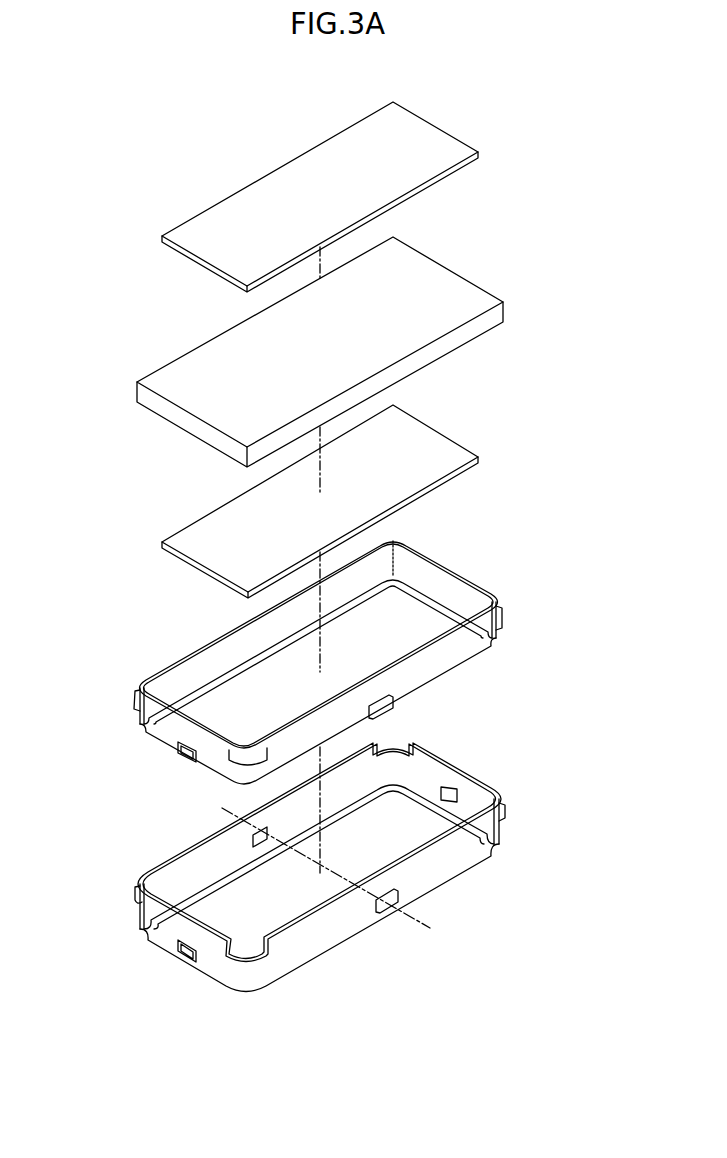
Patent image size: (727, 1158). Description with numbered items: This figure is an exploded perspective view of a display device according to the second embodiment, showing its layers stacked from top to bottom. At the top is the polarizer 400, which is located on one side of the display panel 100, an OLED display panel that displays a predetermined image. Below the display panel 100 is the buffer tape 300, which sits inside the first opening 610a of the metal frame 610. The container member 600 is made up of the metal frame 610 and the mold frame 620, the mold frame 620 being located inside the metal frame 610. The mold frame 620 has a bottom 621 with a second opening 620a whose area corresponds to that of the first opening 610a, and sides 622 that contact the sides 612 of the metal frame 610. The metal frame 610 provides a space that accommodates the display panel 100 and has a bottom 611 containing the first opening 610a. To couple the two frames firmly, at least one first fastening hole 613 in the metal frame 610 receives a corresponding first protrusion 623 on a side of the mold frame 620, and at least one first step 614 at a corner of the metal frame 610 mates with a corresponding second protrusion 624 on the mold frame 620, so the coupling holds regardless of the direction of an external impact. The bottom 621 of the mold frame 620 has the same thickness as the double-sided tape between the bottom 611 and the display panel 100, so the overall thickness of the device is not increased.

The polarizer 400 is at (432, 142).
The display panel 100 is at (432, 285).
The buffer tape 300 is at (432, 448).
The container member 600 is at (590, 562).
The mold frame 620 is at (548, 538).
The sides of the mold frame 622 is at (432, 580).
The bottom of the mold frame 621 is at (450, 615).
The second opening 620a is at (246, 707).
The first protrusion 623 is at (387, 710).
The second protrusion 624 is at (131, 692).
The metal frame 610 is at (548, 730).
The sides of the metal frame 612 is at (432, 767).
The bottom of the metal frame 611 is at (457, 818).
The first opening 610a is at (216, 903).
The first fastening hole 613 is at (397, 903).
The first step 614 is at (507, 808).